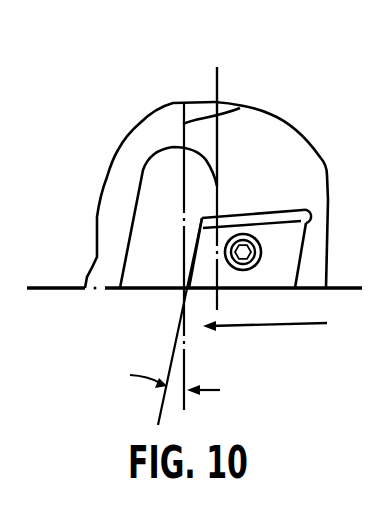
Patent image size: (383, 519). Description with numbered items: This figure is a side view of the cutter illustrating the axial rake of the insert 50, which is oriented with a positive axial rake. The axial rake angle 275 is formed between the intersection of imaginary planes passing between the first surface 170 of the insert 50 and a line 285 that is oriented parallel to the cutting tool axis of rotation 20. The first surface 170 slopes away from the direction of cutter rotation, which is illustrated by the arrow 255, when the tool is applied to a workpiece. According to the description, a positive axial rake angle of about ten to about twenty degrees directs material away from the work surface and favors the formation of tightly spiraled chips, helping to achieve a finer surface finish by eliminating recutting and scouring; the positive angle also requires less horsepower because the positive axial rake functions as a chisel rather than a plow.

The cutting tool axis of rotation 20 is at (215, 72).
The line parallel to the cutting tool axis of rotation 285 is at (238, 110).
The insert 50 is at (293, 247).
The first surface 170 is at (190, 263).
The arrow indicating direction of cutter rotation 255 is at (268, 323).
The axial rake angle 275 is at (204, 256).